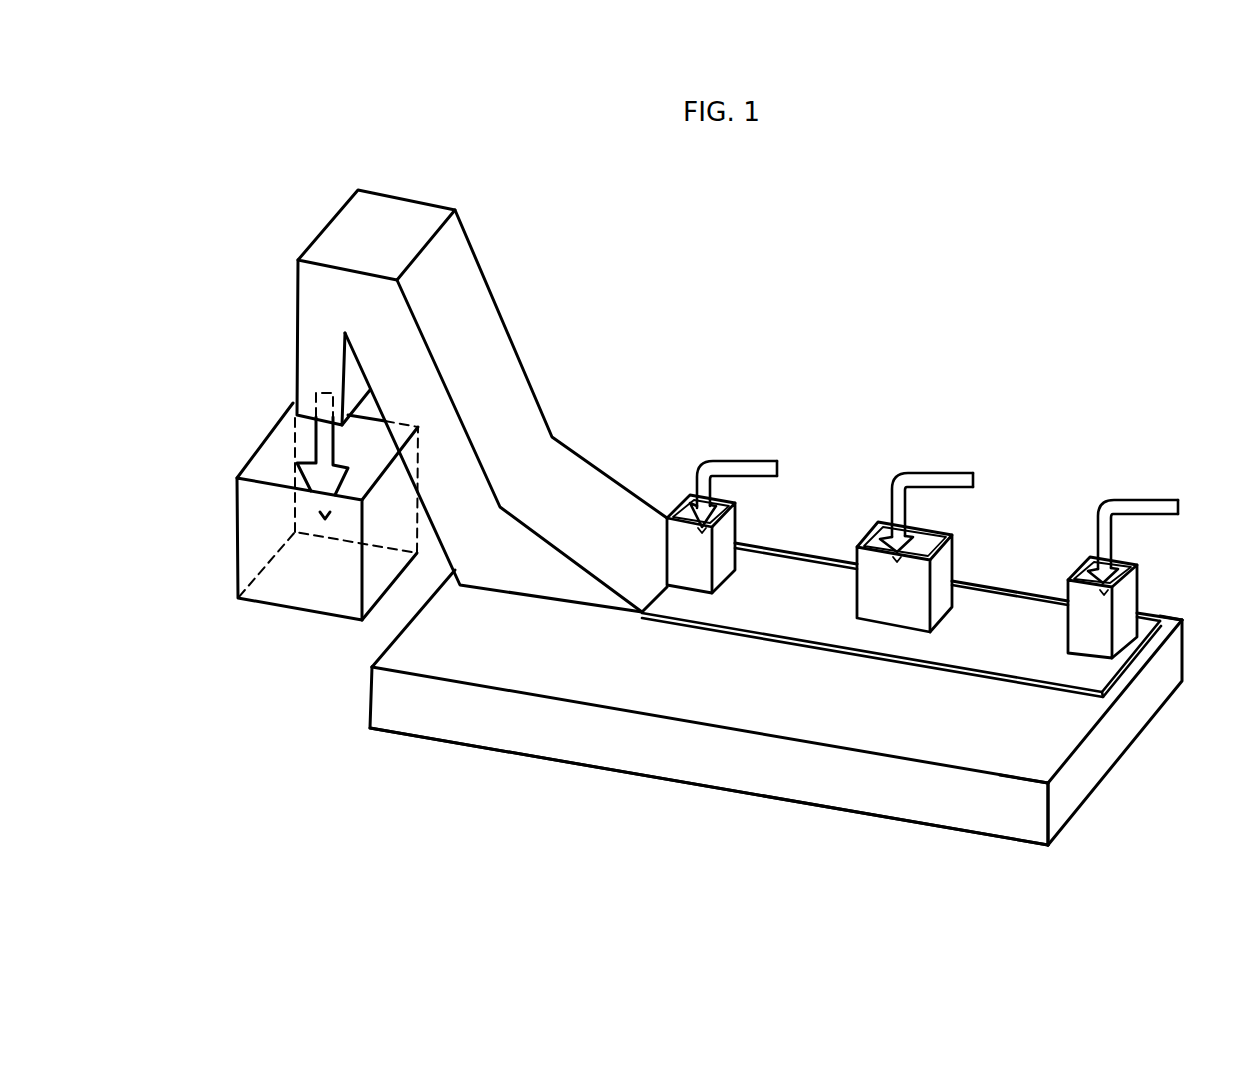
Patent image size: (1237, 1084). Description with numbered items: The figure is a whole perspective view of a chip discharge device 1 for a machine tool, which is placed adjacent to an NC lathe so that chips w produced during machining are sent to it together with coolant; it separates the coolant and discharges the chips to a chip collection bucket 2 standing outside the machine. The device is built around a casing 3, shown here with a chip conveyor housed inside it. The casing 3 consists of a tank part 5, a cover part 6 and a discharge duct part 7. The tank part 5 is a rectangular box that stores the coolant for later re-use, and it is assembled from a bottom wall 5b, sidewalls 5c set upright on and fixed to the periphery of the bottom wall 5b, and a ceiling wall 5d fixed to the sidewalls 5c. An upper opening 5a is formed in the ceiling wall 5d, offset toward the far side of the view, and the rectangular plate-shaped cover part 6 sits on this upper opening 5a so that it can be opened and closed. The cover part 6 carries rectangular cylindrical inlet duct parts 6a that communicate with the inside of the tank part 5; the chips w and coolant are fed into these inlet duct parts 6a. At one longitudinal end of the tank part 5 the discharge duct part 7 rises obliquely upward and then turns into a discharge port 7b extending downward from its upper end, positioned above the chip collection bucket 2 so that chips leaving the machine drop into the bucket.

The chip discharge device 1 is at (776, 330).
The chip collection bucket 2 is at (237, 559).
The casing 3 is at (713, 812).
The tank part 5 is at (813, 818).
The upper opening 5a is at (1115, 670).
The bottom wall 5b is at (928, 800).
The sidewalls 5c is at (977, 817).
The ceiling wall 5d is at (1040, 770).
The cover part 6 is at (995, 578).
The inlet duct parts 6a is at (737, 518).
The discharge duct part 7 is at (514, 332).
The discharge port 7b is at (297, 355).
The chips W is at (757, 461).